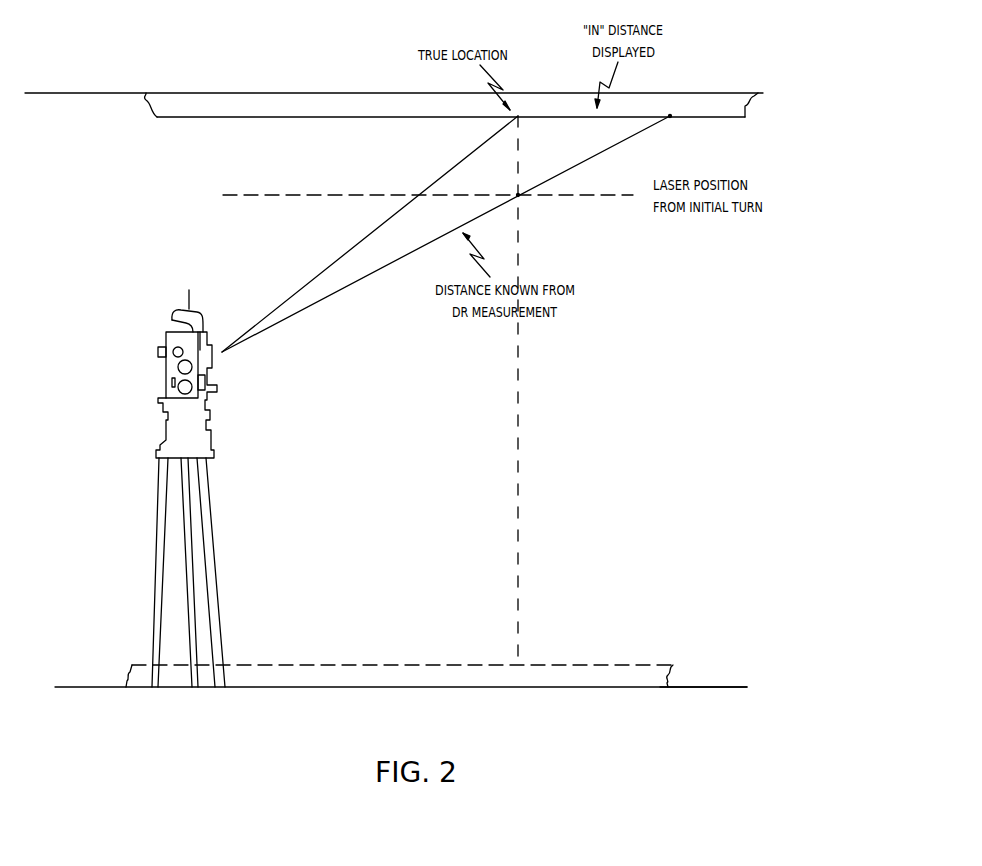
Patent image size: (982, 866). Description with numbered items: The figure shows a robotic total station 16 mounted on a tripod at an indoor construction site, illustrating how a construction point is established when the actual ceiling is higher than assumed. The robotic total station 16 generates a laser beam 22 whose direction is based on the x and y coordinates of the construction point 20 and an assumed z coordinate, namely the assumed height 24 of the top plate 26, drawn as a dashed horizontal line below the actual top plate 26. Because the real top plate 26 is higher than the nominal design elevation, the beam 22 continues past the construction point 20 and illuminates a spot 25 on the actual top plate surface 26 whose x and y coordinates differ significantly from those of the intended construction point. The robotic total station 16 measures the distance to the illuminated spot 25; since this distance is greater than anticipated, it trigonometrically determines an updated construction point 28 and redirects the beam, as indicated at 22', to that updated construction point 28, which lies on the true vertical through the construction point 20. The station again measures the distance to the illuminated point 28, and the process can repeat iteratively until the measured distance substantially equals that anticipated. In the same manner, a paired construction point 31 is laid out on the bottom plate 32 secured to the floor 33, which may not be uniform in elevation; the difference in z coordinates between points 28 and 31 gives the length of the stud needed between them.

The robotic total station 16 is at (237, 387).
The construction point 20 is at (525, 198).
The beam 22 is at (446, 234).
The redirected beam 22' is at (370, 234).
The assumed height of the top plate 24 is at (292, 194).
The spot 25 is at (690, 170).
The top plate 26 is at (201, 117).
The updated construction point 28 is at (518, 115).
The construction point 31 is at (522, 660).
The bottom plate 32 is at (642, 676).
The floor 33 is at (710, 683).